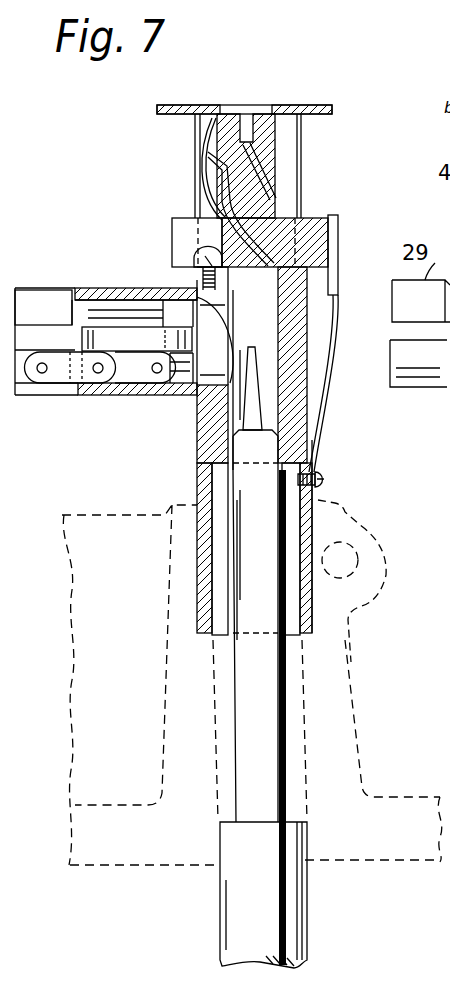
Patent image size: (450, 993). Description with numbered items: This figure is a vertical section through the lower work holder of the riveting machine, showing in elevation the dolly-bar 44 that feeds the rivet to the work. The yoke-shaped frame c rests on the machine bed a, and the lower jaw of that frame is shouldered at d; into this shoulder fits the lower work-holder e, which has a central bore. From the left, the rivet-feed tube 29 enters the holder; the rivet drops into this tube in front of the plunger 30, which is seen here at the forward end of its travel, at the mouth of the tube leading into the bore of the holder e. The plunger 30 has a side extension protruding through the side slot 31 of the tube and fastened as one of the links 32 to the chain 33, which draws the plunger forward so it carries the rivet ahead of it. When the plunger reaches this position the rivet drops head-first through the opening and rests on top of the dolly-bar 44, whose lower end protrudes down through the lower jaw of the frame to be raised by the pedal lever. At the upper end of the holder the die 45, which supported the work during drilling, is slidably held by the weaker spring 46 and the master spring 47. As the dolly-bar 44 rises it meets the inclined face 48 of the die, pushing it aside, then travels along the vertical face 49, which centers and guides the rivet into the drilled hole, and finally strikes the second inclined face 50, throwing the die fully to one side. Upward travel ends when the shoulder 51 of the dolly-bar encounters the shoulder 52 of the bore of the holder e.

The tube 29 is at (80, 270).
The plunger 30 is at (180, 318).
The side slot 31 is at (53, 308).
The link 32 is at (137, 375).
The chain 33 is at (62, 377).
The dolly-bar 44 is at (270, 673).
The die 45 is at (262, 199).
The spring 46 is at (200, 195).
The master spring 47 is at (326, 346).
The inclined face 48 is at (250, 240).
The vertical face 49 is at (232, 188).
The second inclined face 50 is at (222, 164).
The shoulder 51 is at (230, 822).
The shoulder 52 is at (218, 482).
The machine bed a is at (412, 797).
The yoke-shaped frame c is at (90, 513).
The shoulder d is at (210, 638).
The lower work-holder e is at (295, 390).